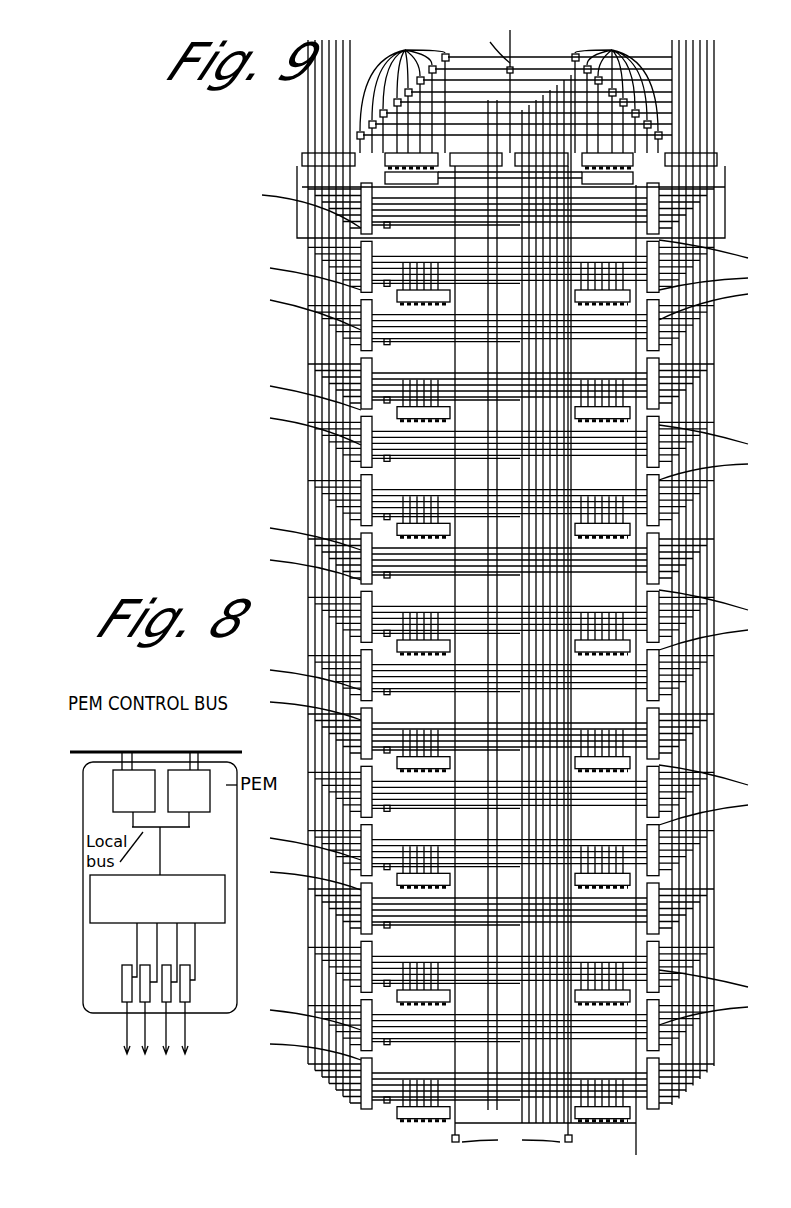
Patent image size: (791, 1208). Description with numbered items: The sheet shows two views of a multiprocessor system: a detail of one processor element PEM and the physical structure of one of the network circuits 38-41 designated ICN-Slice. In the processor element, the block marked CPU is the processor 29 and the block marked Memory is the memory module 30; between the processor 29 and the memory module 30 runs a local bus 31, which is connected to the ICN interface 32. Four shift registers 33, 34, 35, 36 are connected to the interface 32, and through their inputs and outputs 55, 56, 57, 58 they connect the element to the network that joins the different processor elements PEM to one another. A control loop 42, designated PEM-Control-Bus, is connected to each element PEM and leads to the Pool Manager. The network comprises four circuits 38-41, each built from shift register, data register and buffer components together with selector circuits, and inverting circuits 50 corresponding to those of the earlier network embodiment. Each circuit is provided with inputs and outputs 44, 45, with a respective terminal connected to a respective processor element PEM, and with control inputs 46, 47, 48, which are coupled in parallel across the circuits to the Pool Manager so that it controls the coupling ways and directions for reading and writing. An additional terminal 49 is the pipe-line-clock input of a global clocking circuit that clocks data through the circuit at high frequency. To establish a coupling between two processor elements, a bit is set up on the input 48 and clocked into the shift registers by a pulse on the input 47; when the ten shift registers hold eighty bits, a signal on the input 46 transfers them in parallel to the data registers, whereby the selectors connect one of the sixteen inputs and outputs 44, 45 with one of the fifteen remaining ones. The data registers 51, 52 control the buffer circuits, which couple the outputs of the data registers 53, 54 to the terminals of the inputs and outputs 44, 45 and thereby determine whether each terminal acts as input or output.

In FIG. 8, the processor 29 is at (122, 752).
In FIG. 8, the memory module 30 is at (200, 740).
In FIG. 8, the control loop 42 is at (200, 756).
In FIG. 8, the local bus 31 is at (190, 822).
In FIG. 8, the interface 32 is at (216, 862).
In FIG. 8, the shift register 33 is at (190, 975).
In FIG. 8, the shift register 34 is at (171, 994).
In FIG. 8, the shift register 35 is at (145, 972).
In FIG. 8, the shift register 36 is at (122, 987).
In FIG. 8, the input and output 55 is at (126, 1046).
In FIG. 8, the input and output 56 is at (147, 1048).
In FIG. 8, the input and output 57 is at (167, 1050).
In FIG. 8, the input and output 58 is at (186, 1044).
In FIG. 9, the network circuits 38-41 is at (300, 492).
In FIG. 9, the inputs and outputs 44 is at (338, 40).
In FIG. 9, the inputs and outputs 45 is at (690, 40).
In FIG. 9, the control input 46 is at (456, 1145).
In FIG. 9, the control input 47 is at (568, 1145).
In FIG. 9, the control input 48 is at (636, 1155).
In FIG. 9, the clock input 49 is at (510, 32).
In FIG. 9, the inverting circuits 50 is at (361, 258).
In FIG. 9, the data register 51 is at (290, 172).
In FIG. 9, the data register 52 is at (717, 165).
In FIG. 9, the data register 53 is at (455, 60).
In FIG. 9, the data register 54 is at (560, 60).